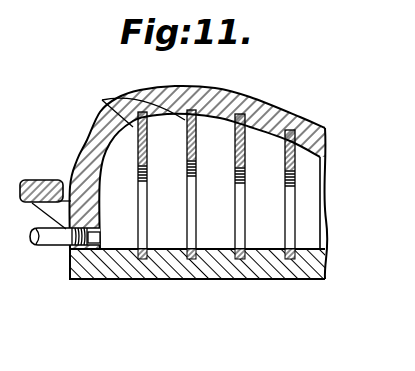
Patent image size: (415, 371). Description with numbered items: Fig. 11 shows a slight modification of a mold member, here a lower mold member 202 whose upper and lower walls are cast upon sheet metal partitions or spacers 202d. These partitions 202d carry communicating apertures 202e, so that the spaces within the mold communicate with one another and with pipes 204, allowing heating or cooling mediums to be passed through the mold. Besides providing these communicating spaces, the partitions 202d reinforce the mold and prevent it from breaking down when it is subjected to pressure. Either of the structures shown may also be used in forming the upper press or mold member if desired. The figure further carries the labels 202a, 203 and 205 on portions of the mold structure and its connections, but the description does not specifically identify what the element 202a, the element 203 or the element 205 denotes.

The lower mold member 202 is at (262, 110).
The base plate 202a is at (272, 270).
The sheet metal partitions or spacers 202d is at (136, 97).
The communicating apertures 202e is at (188, 225).
The chamber 203 is at (210, 143).
The pipes 204 is at (48, 240).
The block 205 is at (37, 182).